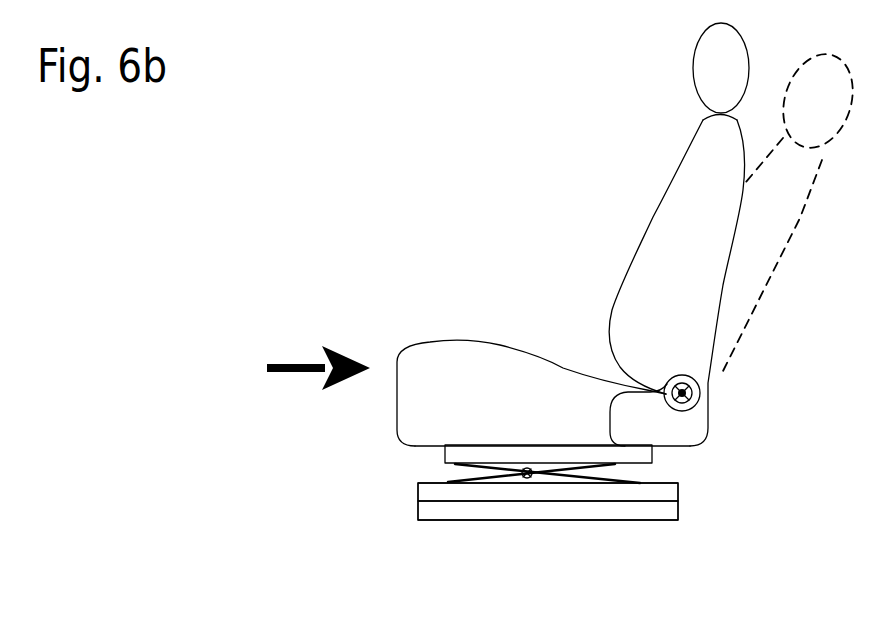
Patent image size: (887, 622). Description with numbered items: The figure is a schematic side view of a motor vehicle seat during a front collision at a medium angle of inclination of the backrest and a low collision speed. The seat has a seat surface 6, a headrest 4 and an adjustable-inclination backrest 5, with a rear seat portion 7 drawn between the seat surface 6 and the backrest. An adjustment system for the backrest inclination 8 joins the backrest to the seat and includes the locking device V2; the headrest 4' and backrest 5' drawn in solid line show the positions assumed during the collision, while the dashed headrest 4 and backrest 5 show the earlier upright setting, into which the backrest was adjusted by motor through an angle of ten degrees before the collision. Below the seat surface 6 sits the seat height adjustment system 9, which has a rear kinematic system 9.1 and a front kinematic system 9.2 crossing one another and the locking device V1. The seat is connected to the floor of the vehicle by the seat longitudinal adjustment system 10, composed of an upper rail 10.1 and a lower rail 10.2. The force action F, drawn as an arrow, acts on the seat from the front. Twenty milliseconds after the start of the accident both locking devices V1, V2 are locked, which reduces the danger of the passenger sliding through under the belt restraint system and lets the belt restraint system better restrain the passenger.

The force action F is at (318, 327).
The headrest 4 is at (818, 101).
The headrest 4' is at (721, 68).
The backrest 5 is at (772, 255).
The backrest 5' is at (676, 281).
The seat surface 6 is at (543, 393).
The rear seat part 7 is at (638, 415).
The adjustment system for the backrest inclination 8 is at (705, 388).
The locking device V2 is at (694, 397).
The seat height adjustment system 9 is at (630, 467).
The rear kinematic system 9.1 is at (618, 478).
The front kinematic system 9.2 is at (500, 476).
The locking device V1 is at (529, 478).
The seat longitudinal adjustment system 10 is at (430, 533).
The upper rail 10.1 is at (418, 493).
The lower rail 10.2 is at (418, 511).